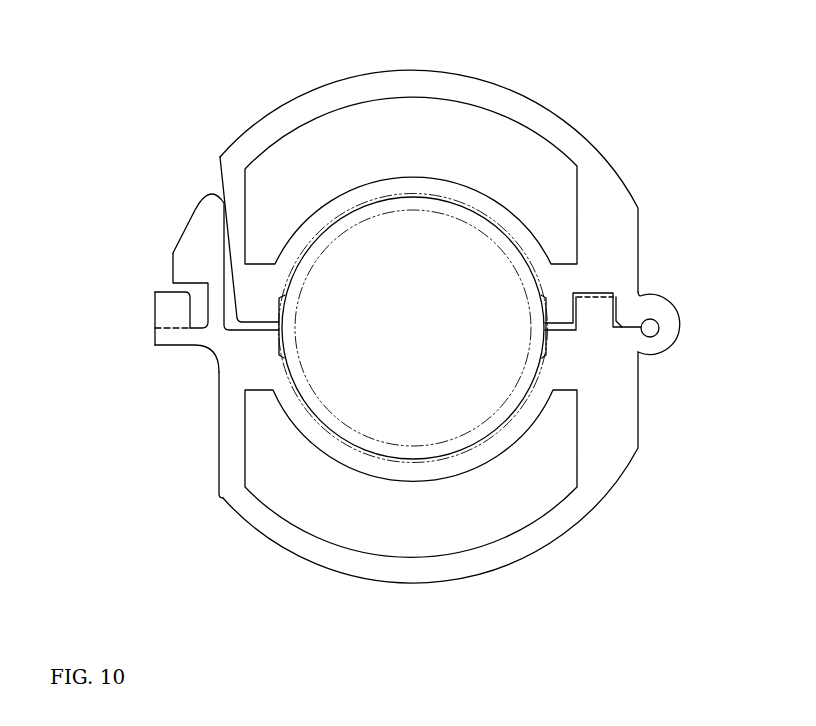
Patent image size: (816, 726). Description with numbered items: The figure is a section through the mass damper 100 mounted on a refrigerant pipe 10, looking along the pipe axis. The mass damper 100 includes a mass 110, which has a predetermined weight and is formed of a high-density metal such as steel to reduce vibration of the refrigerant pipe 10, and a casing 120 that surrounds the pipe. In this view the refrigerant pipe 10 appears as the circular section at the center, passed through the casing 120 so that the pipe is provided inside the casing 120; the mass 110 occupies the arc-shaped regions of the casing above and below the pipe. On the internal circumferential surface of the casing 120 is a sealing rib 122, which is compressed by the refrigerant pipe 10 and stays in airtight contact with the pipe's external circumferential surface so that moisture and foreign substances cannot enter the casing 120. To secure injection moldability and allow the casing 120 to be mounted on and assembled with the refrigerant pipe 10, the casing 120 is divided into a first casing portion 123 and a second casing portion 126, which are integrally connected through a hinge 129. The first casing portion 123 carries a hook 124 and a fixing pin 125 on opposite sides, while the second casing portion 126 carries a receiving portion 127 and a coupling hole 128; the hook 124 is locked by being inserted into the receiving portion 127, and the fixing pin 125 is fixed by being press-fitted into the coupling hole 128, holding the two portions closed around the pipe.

The mass damper 100 is at (405, 314).
The refrigerant pipe 10 is at (413, 405).
The mass 110 is at (538, 163).
The casing 120 is at (405, 326).
The sealing rib 122 is at (288, 290).
The first casing portion 123 is at (232, 415).
The hook 124 is at (198, 227).
The fixing pin 125 is at (603, 315).
The second casing portion 126 is at (156, 345).
The receiving portion 127 is at (165, 300).
The coupling hole 128 is at (613, 295).
The hinge 129 is at (672, 327).